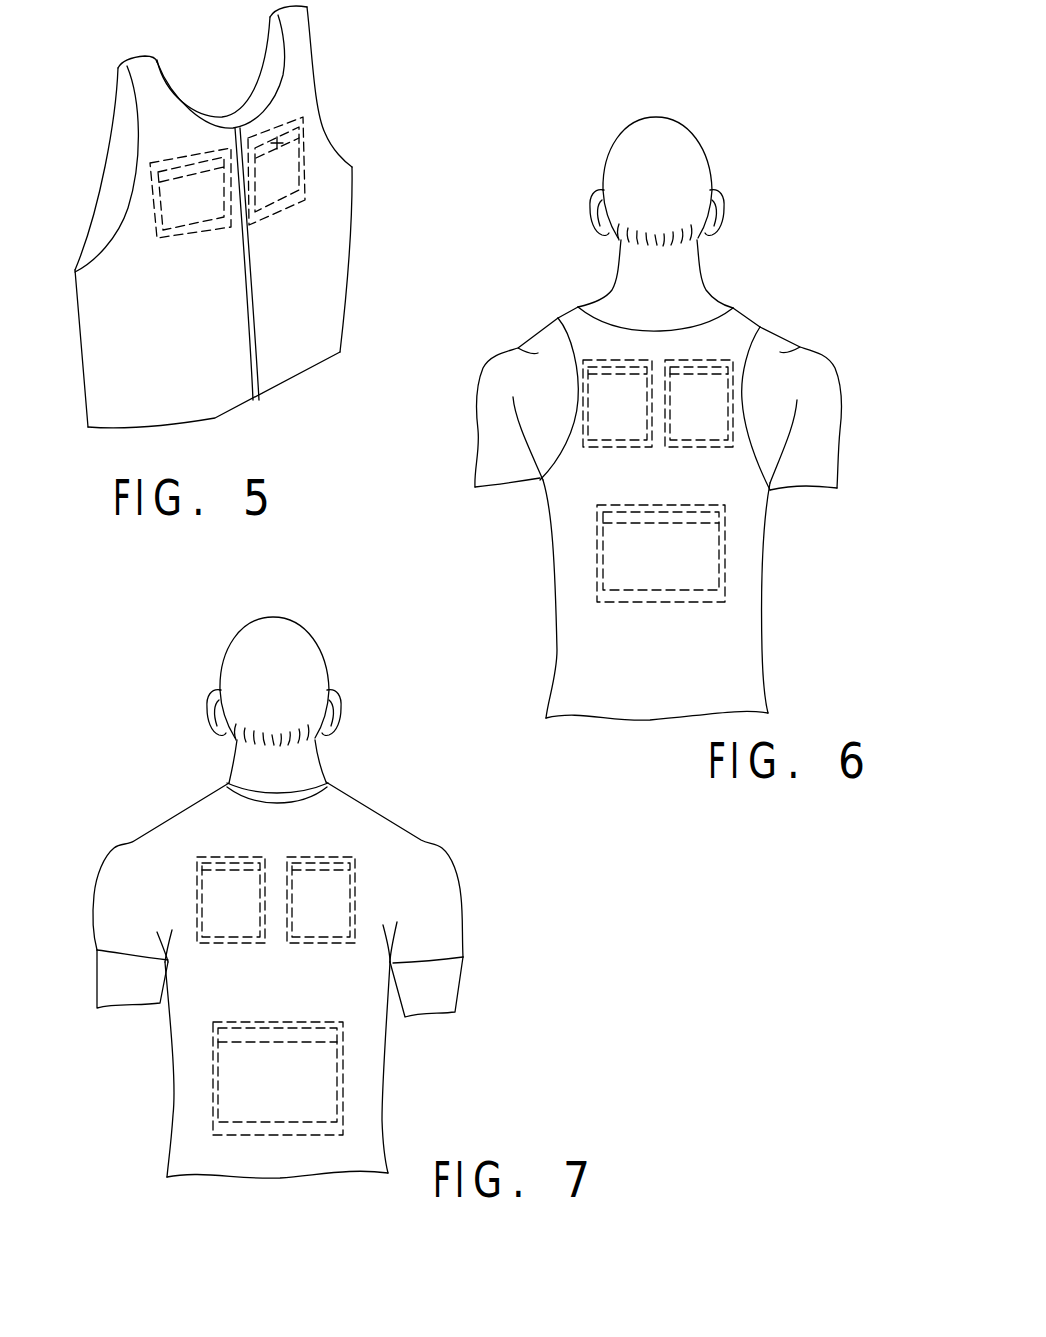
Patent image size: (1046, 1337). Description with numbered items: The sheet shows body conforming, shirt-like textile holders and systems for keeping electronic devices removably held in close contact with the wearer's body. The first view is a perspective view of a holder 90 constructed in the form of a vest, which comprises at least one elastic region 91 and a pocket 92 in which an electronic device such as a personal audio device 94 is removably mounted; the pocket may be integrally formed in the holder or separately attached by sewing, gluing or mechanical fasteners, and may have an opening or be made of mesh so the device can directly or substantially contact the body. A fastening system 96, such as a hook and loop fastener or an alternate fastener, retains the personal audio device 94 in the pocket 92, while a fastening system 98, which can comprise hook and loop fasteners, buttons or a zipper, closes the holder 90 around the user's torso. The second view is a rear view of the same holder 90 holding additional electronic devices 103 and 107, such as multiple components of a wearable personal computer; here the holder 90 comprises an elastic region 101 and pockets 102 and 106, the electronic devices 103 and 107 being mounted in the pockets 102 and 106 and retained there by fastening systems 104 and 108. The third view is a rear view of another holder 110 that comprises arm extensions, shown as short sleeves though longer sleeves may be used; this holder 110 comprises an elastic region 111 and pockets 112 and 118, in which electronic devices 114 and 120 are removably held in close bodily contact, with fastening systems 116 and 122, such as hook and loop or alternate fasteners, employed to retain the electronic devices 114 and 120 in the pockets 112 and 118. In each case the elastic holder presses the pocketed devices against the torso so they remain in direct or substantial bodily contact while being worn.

In FIG. 5, the holder 90 is at (364, 144).
In FIG. 6, the holder 90 is at (525, 560).
In FIG. 5, the elastic region 91 is at (327, 258).
In FIG. 5, the pocket 92 is at (323, 143).
In FIG. 5, the personal audio device 94 is at (290, 178).
In FIG. 5, the fastening system 96 is at (279, 137).
In FIG. 5, the fastening system 98 is at (259, 367).
In FIG. 6, the elastic region 101 is at (718, 485).
In FIG. 6, the pocket 102 is at (735, 387).
In FIG. 6, the electronic device 103 is at (717, 410).
In FIG. 6, the fastening system 104 is at (708, 367).
In FIG. 6, the pocket 106 is at (727, 547).
In FIG. 6, the electronic device 107 is at (692, 560).
In FIG. 6, the fastening system 108 is at (612, 514).
In FIG. 7, the holder 110 is at (392, 806).
In FIG. 7, the elastic region 111 is at (332, 997).
In FIG. 7, the pocket 112 is at (197, 887).
In FIG. 7, the electronic device 114 is at (217, 920).
In FIG. 7, the fastening system 116 is at (221, 866).
In FIG. 7, the pocket 118 is at (213, 1077).
In FIG. 7, the electronic device 120 is at (237, 1113).
In FIG. 7, the fastening system 122 is at (217, 1032).